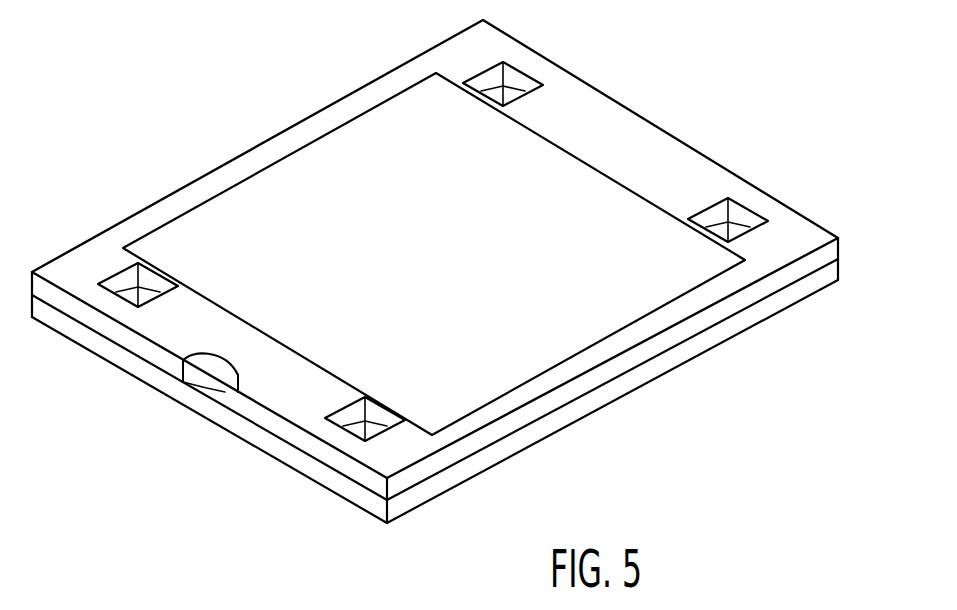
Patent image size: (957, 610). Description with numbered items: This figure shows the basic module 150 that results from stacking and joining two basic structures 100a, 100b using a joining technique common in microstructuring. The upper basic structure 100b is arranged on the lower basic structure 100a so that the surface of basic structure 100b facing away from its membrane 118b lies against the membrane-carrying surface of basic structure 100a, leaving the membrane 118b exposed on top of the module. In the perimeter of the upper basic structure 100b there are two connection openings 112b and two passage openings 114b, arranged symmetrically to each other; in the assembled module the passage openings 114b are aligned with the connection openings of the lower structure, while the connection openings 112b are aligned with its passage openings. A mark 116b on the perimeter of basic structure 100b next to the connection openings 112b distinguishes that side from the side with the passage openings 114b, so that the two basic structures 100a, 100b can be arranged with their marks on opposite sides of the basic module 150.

The basic module 150 is at (268, 120).
The basic structure 100a is at (635, 379).
The basic structure 100b is at (727, 308).
The connection openings 112b is at (128, 277).
The passage openings 114b is at (520, 80).
The mark 116b is at (214, 370).
The membrane 118b is at (597, 188).